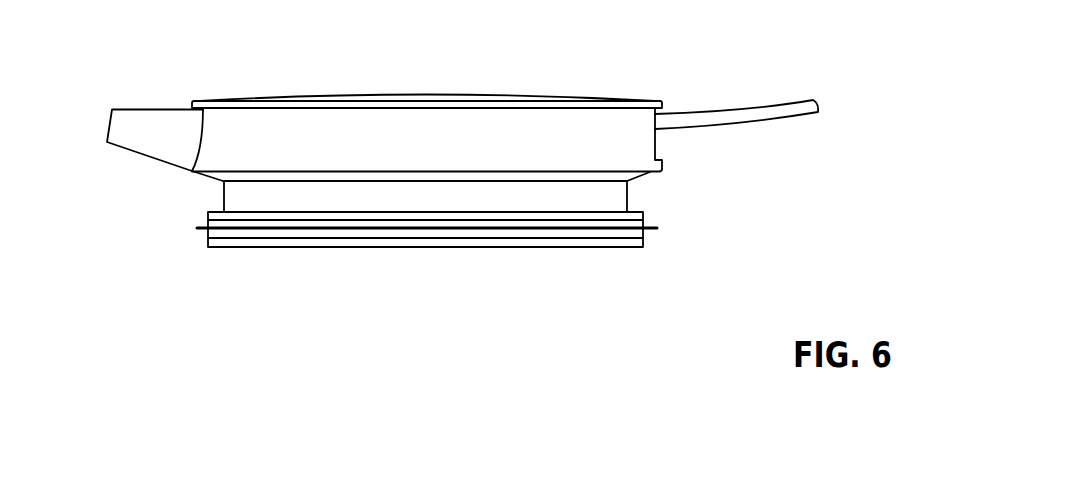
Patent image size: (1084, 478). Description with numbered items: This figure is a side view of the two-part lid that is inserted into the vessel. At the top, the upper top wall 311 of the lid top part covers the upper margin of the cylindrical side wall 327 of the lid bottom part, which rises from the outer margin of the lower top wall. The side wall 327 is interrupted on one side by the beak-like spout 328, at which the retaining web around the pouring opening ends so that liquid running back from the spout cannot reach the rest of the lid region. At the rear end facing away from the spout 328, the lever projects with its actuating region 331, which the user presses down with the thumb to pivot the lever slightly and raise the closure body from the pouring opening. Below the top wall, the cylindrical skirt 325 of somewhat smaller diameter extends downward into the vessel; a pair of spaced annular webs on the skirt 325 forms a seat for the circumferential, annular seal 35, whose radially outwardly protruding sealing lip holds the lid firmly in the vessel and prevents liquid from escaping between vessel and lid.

The upper top wall 311 is at (440, 100).
The side wall 327 is at (257, 125).
The spout 328 is at (160, 125).
The actuating region 331 is at (718, 120).
The skirt 325 is at (613, 197).
The seal 35 is at (513, 230).